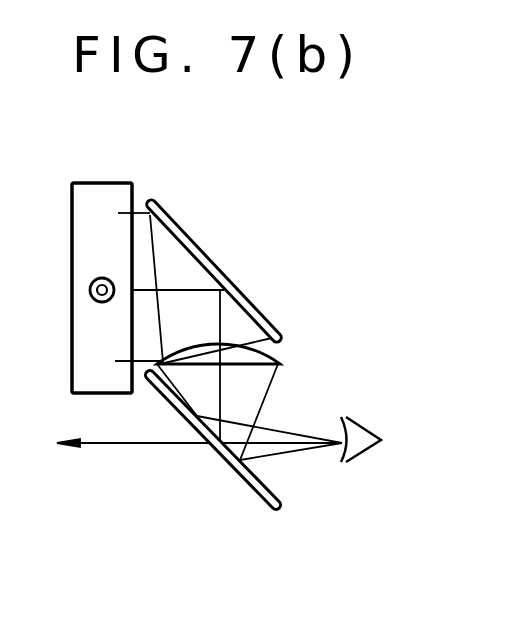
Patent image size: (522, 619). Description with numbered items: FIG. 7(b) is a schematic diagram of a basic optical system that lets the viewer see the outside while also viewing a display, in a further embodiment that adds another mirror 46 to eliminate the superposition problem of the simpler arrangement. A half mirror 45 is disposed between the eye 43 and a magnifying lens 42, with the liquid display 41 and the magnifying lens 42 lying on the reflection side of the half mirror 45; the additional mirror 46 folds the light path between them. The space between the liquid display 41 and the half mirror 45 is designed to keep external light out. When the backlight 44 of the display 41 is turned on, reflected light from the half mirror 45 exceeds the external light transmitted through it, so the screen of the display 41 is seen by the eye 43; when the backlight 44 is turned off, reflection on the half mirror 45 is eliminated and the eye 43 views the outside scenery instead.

The liquid display 41 is at (103, 192).
The magnifying lens 42 is at (278, 364).
The eye 43 is at (358, 432).
The backlight 44 is at (95, 283).
The half mirror 45 is at (240, 478).
The mirror 46 is at (217, 268).